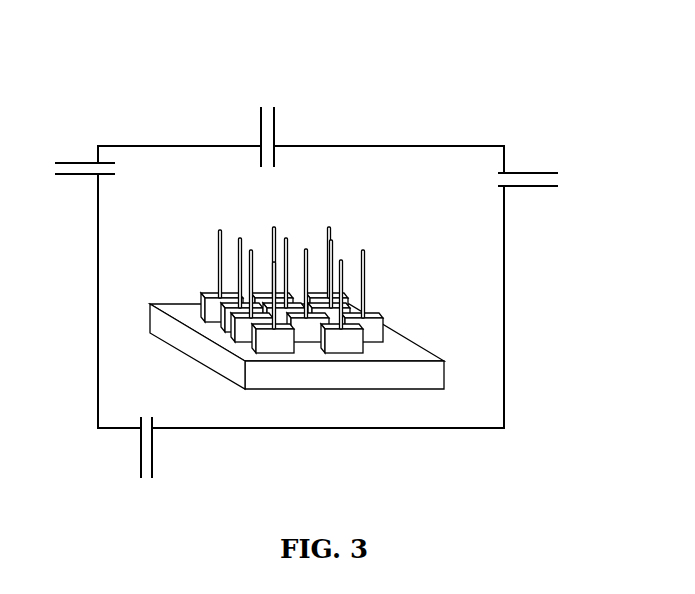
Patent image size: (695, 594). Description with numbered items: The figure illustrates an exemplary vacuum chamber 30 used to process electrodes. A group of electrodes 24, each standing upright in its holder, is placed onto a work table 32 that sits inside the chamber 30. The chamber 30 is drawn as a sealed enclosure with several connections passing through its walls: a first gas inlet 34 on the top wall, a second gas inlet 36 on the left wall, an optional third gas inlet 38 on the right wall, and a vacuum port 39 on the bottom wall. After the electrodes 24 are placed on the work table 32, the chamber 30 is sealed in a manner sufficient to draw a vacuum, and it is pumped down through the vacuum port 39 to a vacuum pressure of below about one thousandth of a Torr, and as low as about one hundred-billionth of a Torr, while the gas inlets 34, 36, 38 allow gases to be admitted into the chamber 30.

The vacuum chamber 30 is at (378, 104).
The electrode 24 is at (372, 278).
The work table 32 is at (433, 350).
The first gas inlet 34 is at (276, 121).
The second gas inlet 36 is at (80, 152).
The third gas inlet 38 is at (562, 181).
The vacuum port 39 is at (163, 449).